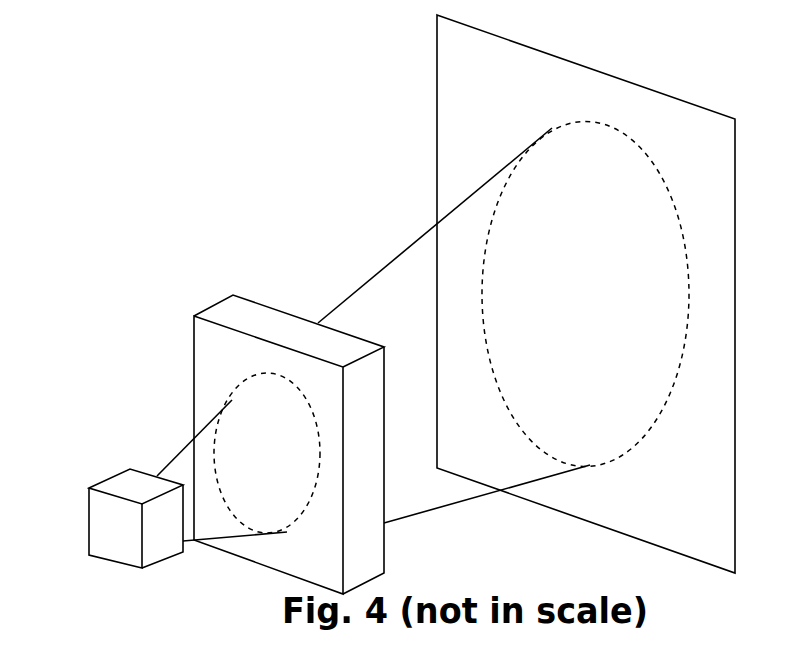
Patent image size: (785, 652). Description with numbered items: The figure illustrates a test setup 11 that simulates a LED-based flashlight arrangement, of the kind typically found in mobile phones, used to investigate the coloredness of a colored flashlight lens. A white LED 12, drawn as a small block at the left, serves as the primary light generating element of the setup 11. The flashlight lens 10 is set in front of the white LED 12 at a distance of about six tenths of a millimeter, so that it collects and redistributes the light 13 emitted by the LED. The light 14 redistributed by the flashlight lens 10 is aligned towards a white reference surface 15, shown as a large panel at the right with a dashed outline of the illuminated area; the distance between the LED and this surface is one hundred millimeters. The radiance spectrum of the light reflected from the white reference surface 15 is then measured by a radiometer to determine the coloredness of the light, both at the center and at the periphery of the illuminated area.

The flashlight lens 10 is at (208, 369).
The setup 11 is at (172, 173).
The white LED 12 is at (108, 538).
The light emitted by the LED 13 is at (183, 462).
The light redistributed by the lens 14 is at (402, 280).
The white reference surface 15 is at (457, 102).